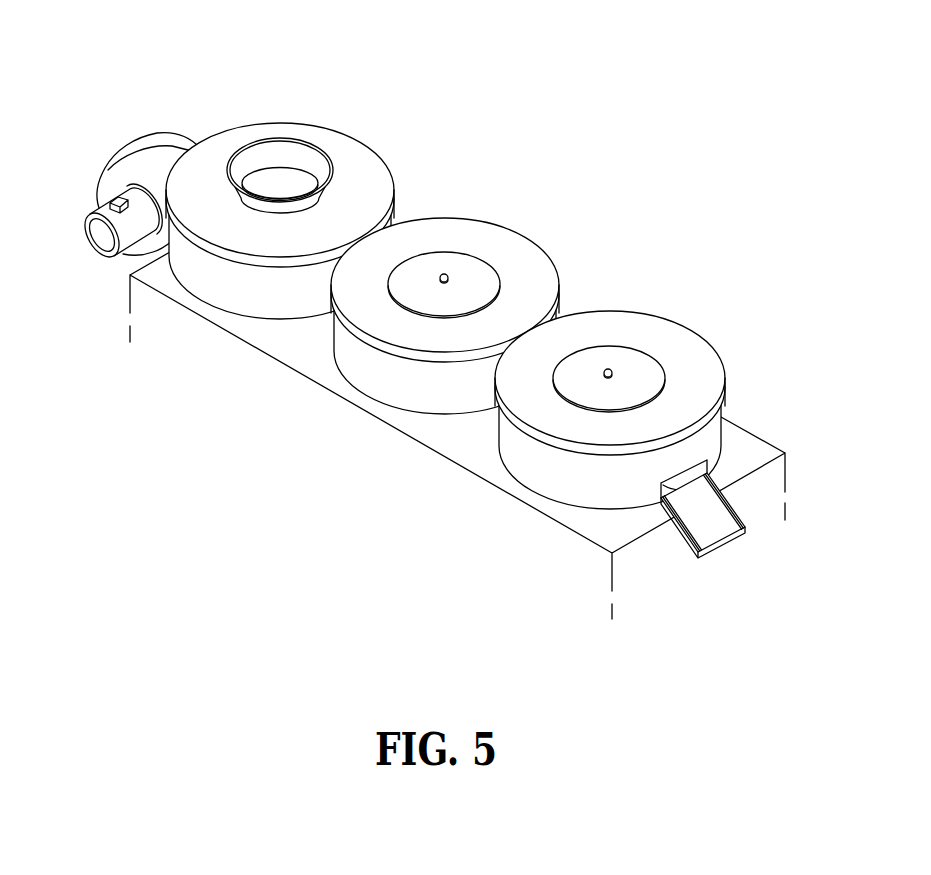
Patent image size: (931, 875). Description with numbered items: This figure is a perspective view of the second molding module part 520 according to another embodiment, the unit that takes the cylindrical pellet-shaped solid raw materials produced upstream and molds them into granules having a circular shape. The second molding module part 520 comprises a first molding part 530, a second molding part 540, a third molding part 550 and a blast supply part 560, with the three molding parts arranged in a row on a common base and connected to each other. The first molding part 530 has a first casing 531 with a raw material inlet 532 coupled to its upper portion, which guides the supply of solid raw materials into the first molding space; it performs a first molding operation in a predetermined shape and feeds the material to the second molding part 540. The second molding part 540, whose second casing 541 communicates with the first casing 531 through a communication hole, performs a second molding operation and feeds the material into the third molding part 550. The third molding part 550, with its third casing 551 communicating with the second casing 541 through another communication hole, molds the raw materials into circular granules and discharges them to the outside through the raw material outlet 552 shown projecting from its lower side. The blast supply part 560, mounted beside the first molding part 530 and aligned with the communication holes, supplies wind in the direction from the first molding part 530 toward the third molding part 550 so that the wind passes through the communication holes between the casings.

The second molding module part 520 is at (566, 80).
The first molding part 530 is at (293, 230).
The first casing 531 is at (233, 290).
The raw material inlet 532 is at (282, 139).
The second molding part 540 is at (449, 320).
The second casing 541 is at (382, 372).
The third molding part 550 is at (622, 409).
The third casing 551 is at (545, 460).
The raw material outlet 552 is at (690, 488).
The blast supply part 560 is at (156, 144).